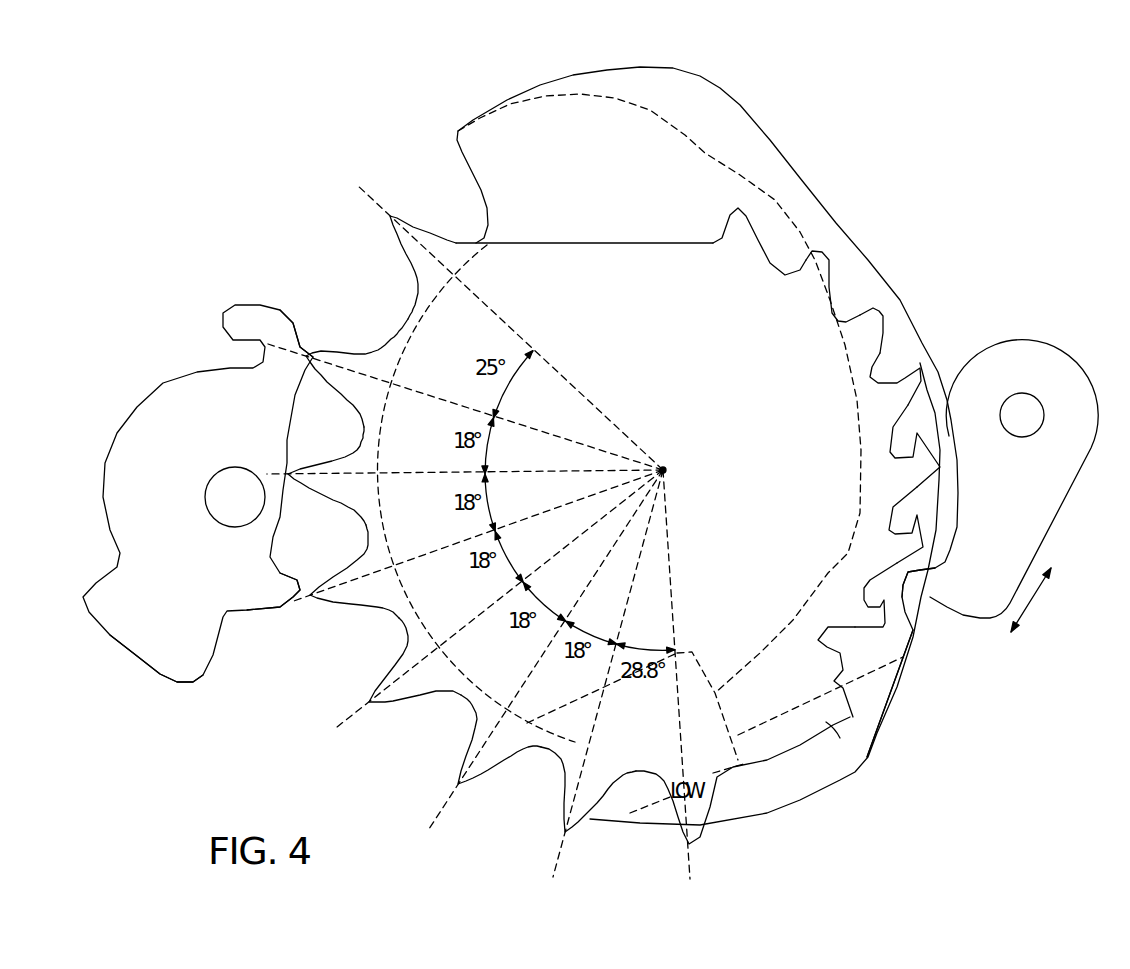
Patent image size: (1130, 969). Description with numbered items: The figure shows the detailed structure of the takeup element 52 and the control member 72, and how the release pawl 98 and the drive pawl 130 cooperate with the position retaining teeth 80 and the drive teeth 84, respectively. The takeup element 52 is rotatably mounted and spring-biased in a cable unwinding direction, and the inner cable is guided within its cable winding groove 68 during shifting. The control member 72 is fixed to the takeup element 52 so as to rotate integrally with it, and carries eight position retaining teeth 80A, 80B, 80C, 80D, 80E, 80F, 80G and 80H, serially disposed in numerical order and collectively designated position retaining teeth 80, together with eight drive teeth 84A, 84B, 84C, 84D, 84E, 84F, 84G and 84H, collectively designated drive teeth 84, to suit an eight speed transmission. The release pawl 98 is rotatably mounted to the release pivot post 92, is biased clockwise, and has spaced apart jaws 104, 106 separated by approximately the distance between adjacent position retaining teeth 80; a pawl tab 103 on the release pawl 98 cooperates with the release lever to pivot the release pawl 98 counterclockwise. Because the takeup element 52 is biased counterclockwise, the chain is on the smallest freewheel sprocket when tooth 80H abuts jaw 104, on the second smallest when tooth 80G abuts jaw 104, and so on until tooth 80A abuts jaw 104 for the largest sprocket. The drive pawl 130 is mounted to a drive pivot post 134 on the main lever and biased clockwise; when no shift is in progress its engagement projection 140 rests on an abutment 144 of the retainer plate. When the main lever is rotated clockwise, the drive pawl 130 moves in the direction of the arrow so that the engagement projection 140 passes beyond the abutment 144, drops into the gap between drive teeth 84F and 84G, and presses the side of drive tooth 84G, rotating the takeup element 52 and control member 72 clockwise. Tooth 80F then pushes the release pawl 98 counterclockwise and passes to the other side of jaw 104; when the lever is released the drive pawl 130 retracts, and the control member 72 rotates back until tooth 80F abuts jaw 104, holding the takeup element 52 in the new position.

The takeup element 52 is at (740, 96).
The cable winding groove 68 is at (780, 198).
The control member 72 is at (876, 740).
The position retaining teeth 80 is at (549, 520).
The position retaining tooth 80A is at (696, 848).
The position retaining tooth 80B is at (577, 830).
The position retaining tooth 80C is at (468, 787).
The position retaining tooth 80D is at (400, 703).
The position retaining tooth 80E is at (340, 600).
The position retaining tooth 80F is at (320, 497).
The position retaining tooth 80G is at (347, 350).
The position retaining tooth 80H is at (398, 213).
The drive teeth 84 is at (824, 452).
The drive tooth 84A is at (727, 221).
The drive tooth 84B is at (820, 240).
The drive tooth 84C is at (866, 300).
The drive tooth 84D is at (903, 365).
The drive tooth 84E is at (893, 427).
The drive tooth 84F is at (890, 510).
The drive tooth 84G is at (870, 580).
The drive tooth 84H is at (813, 640).
The release pivot post 92 is at (223, 488).
The release pawl 98 is at (206, 499).
The pawl tab 103 is at (164, 676).
The jaw 104 is at (299, 383).
The jaw 106 is at (270, 596).
The drive pawl 130 is at (1016, 486).
The drive pivot post 134 is at (1026, 407).
The engagement projection 140 is at (922, 600).
The abutment 144 is at (912, 642).